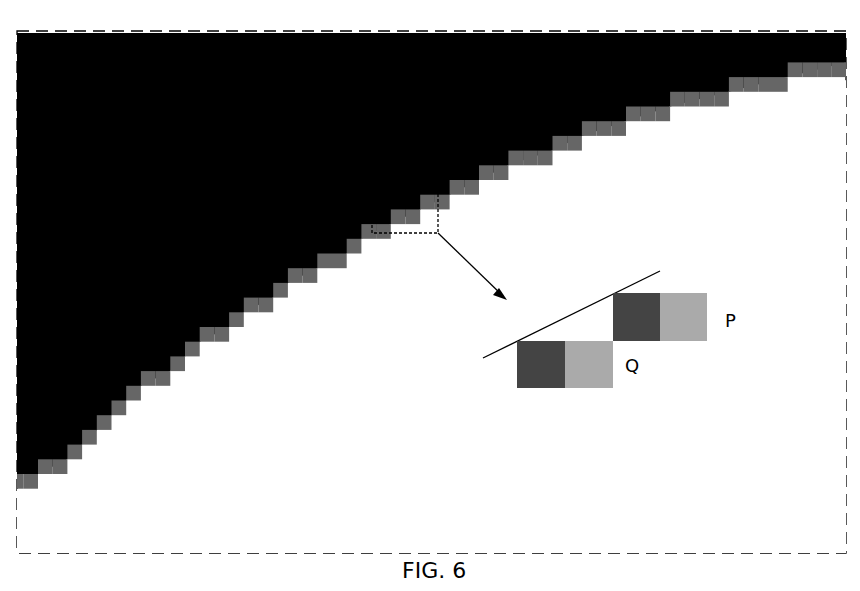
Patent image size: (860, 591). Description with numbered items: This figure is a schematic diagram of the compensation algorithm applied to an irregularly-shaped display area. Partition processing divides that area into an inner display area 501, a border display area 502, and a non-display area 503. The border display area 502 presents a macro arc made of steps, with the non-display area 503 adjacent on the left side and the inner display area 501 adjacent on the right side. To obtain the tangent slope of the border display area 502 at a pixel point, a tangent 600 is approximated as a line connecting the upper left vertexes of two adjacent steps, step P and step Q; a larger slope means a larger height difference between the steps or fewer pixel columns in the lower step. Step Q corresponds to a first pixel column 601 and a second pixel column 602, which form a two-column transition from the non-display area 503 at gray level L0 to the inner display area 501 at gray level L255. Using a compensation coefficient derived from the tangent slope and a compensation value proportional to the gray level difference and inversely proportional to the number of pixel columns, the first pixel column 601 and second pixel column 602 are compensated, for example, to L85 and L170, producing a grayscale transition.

The inner display area 501 is at (431, 316).
The border display area 502 is at (200, 344).
The non-display area 503 is at (431, 253).
The tangent 600 is at (553, 320).
The first pixel column 601 is at (588, 352).
The second pixel column 602 is at (636, 352).